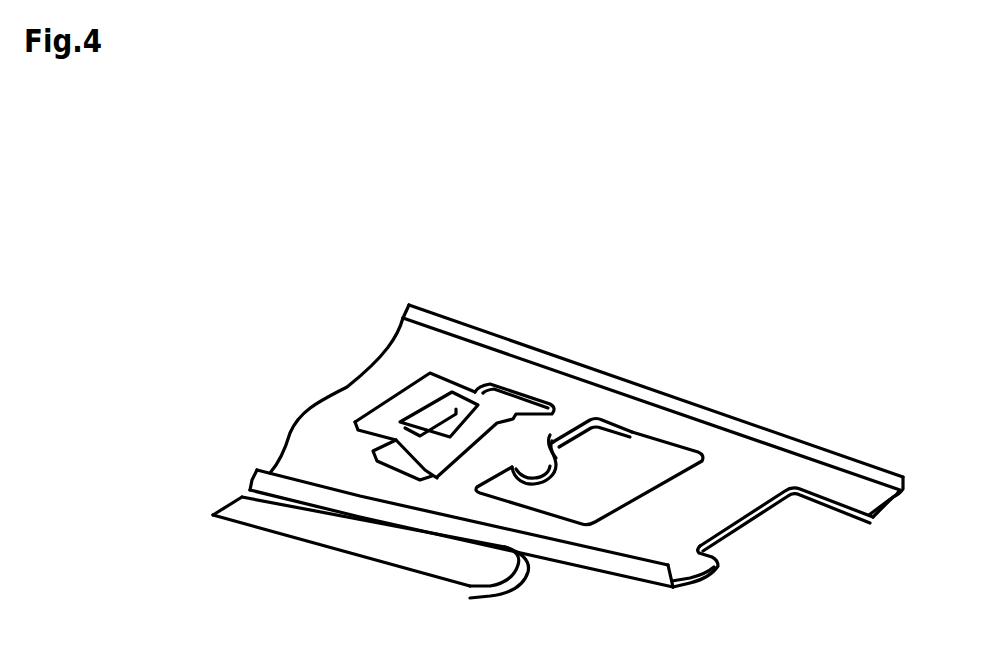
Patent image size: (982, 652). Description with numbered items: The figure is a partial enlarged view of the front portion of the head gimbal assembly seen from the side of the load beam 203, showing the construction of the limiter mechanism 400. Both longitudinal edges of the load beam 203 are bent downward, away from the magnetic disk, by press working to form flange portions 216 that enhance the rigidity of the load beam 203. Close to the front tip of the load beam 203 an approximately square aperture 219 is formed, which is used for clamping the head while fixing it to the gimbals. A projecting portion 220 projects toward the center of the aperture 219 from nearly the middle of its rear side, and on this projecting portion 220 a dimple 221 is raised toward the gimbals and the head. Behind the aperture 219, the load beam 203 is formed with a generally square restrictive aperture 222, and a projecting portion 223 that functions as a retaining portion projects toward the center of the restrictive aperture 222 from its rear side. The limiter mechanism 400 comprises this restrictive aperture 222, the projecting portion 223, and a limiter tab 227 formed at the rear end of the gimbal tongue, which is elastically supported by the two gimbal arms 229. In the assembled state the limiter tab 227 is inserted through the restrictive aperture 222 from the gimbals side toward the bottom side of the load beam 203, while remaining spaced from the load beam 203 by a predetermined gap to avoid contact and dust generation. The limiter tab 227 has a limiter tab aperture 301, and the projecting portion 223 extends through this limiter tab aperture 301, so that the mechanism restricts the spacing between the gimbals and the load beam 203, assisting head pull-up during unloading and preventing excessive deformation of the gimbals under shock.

The limiter mechanism 400 is at (795, 300).
The flange portions 216 is at (851, 464).
The load beam 203 is at (836, 483).
The aperture 219 is at (637, 460).
The projecting portion 220 is at (588, 432).
The dimple 221 is at (533, 470).
The restrictive aperture 222 is at (540, 394).
The projecting portion 223 is at (502, 391).
The limiter tab 227 is at (400, 404).
The gimbal arms 229 is at (427, 581).
The limiter tab aperture 301 is at (437, 446).